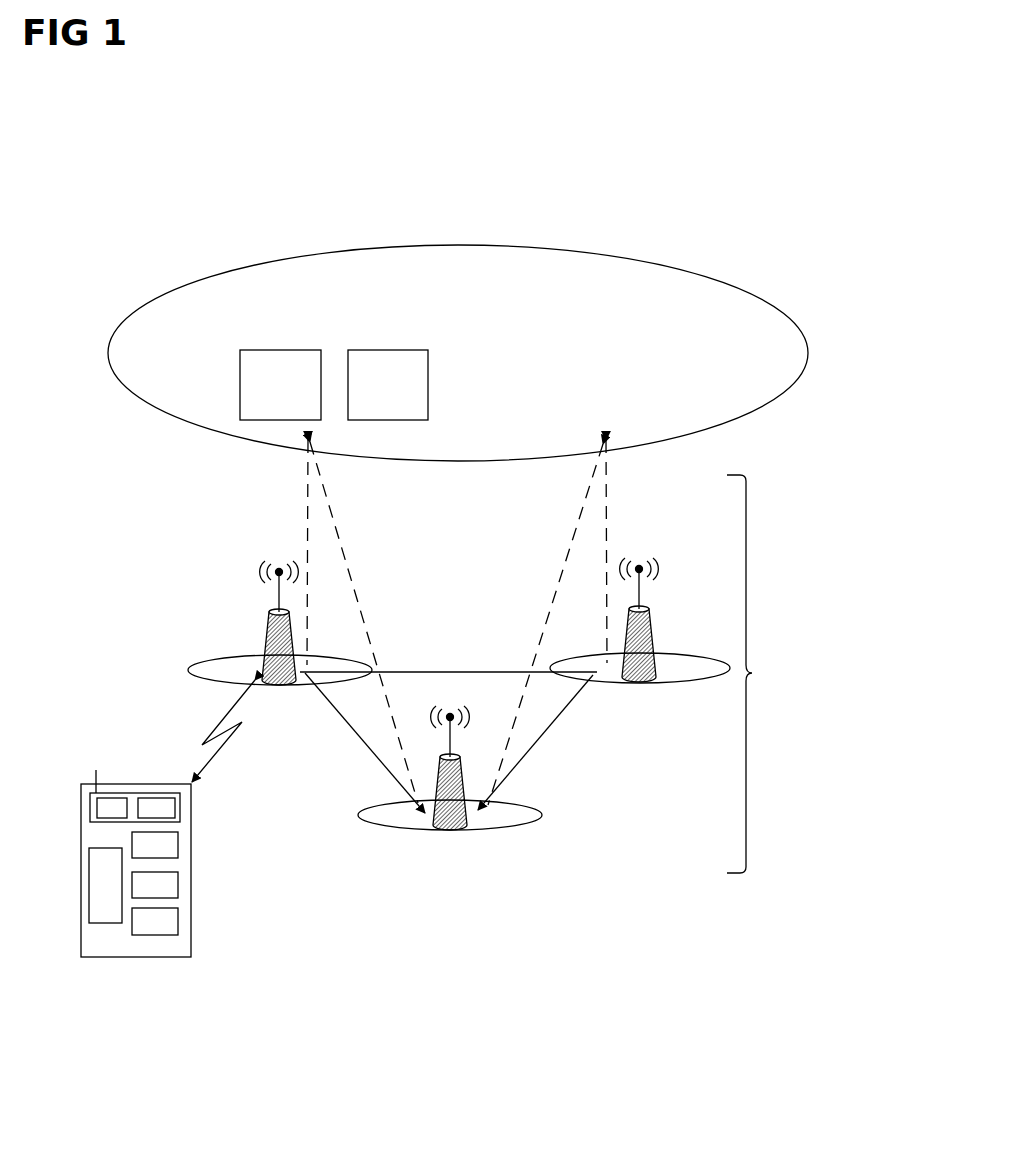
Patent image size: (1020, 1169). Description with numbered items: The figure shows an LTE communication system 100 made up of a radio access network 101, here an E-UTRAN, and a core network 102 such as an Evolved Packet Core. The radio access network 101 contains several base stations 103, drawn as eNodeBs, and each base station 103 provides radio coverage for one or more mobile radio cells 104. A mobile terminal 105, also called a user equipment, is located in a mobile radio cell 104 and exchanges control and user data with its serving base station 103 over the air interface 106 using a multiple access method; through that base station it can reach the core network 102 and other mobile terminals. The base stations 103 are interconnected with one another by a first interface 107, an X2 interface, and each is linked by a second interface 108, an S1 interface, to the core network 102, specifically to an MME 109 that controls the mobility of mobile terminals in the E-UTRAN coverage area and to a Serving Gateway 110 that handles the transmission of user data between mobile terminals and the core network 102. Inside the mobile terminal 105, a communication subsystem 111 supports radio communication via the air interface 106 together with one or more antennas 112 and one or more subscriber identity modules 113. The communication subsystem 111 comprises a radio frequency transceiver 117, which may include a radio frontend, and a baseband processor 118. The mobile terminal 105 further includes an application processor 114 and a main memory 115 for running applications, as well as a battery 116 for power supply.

The communication system 100 is at (810, 162).
The radio access network 101 is at (850, 650).
The core network 102 is at (799, 326).
The base station 103 is at (263, 616).
The mobile radio cell 104 is at (203, 673).
The mobile terminal 105 is at (128, 957).
The air interface 106 is at (222, 738).
The first interface 107 is at (455, 664).
The second interface 108 is at (303, 503).
The MME 109 is at (281, 350).
The Serving Gateway 110 is at (388, 350).
The communication subsystem 111 is at (90, 803).
The antenna 112 is at (96, 772).
The subscriber identity module 113 is at (178, 846).
The application processor 114 is at (178, 886).
The main memory 115 is at (178, 921).
The battery 116 is at (89, 881).
The radio frequency transceiver 117 is at (115, 796).
The baseband processor 118 is at (180, 812).